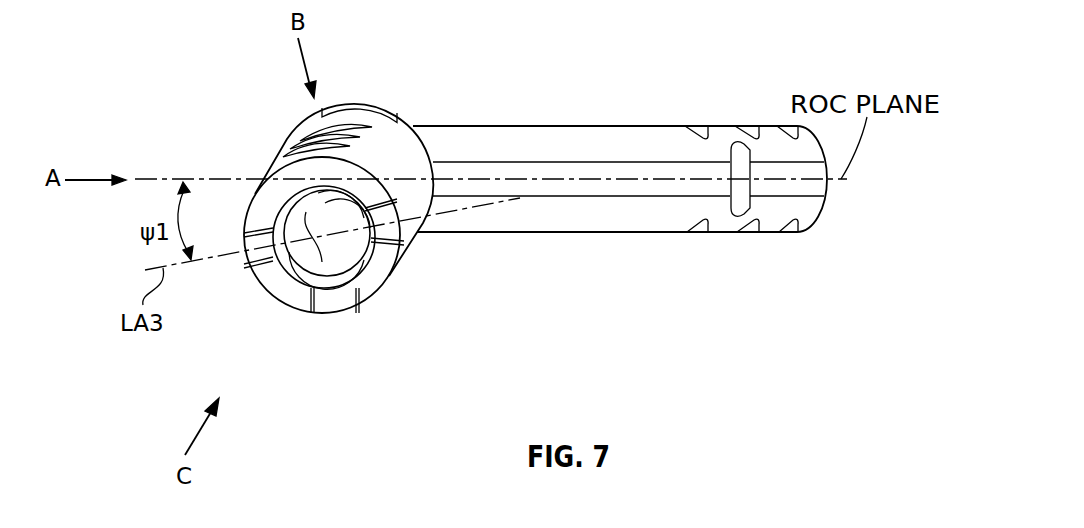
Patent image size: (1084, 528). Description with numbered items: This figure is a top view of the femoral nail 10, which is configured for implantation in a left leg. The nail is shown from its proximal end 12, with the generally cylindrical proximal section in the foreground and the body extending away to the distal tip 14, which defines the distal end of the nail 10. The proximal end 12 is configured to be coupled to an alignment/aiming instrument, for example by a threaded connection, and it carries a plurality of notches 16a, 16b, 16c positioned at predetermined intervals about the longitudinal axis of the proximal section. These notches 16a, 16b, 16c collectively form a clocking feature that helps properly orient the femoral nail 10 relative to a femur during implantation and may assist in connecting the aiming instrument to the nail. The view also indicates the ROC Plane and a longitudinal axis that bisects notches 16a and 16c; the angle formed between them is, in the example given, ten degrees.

The femoral nail 10 is at (175, 68).
The proximal end 12 is at (383, 290).
The distal tip 14 is at (814, 218).
The notch 16a is at (247, 260).
The notch 16b is at (333, 315).
The notch 16c is at (410, 238).